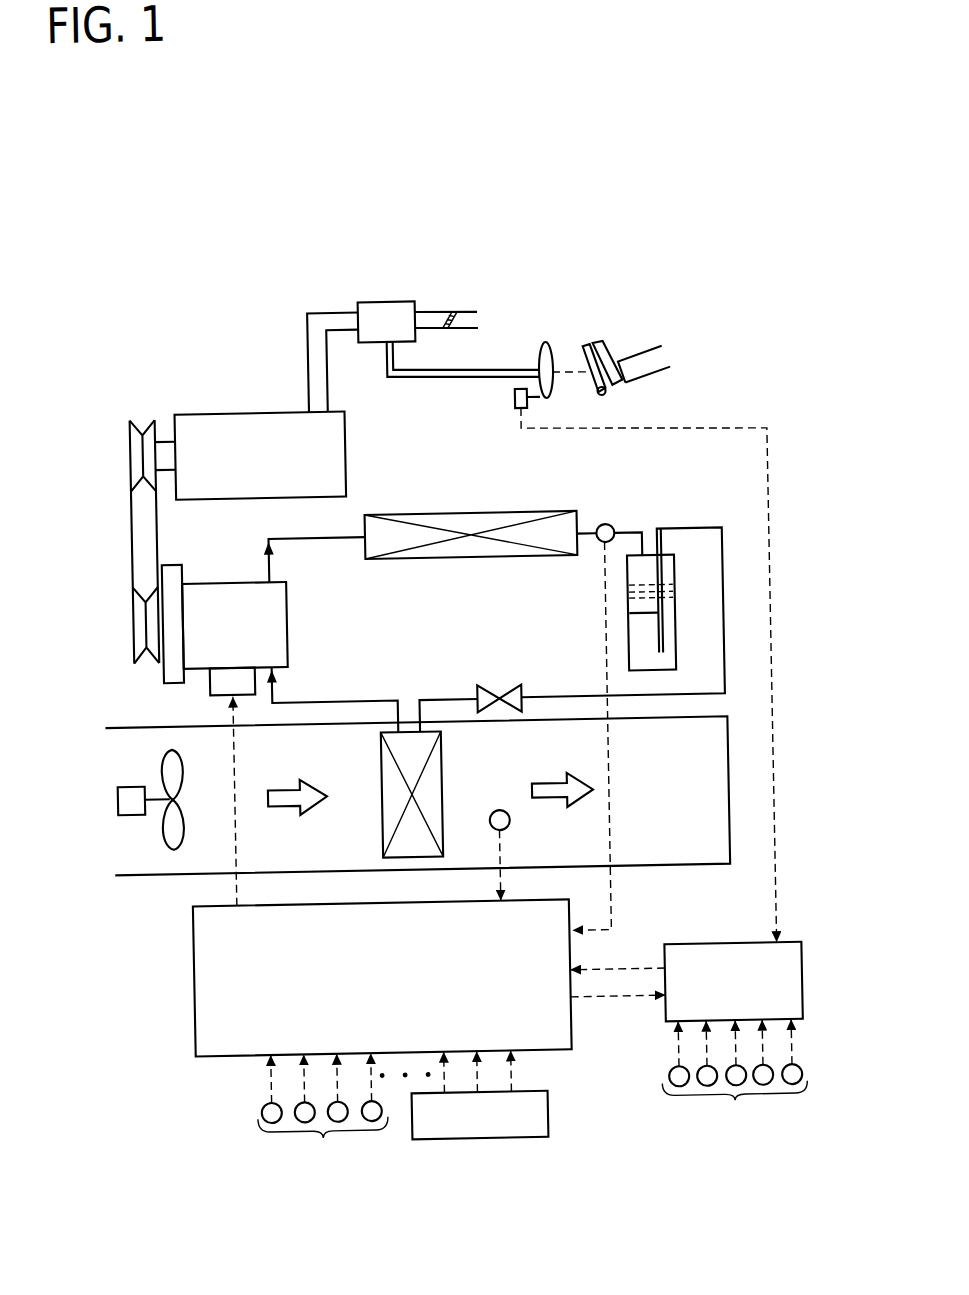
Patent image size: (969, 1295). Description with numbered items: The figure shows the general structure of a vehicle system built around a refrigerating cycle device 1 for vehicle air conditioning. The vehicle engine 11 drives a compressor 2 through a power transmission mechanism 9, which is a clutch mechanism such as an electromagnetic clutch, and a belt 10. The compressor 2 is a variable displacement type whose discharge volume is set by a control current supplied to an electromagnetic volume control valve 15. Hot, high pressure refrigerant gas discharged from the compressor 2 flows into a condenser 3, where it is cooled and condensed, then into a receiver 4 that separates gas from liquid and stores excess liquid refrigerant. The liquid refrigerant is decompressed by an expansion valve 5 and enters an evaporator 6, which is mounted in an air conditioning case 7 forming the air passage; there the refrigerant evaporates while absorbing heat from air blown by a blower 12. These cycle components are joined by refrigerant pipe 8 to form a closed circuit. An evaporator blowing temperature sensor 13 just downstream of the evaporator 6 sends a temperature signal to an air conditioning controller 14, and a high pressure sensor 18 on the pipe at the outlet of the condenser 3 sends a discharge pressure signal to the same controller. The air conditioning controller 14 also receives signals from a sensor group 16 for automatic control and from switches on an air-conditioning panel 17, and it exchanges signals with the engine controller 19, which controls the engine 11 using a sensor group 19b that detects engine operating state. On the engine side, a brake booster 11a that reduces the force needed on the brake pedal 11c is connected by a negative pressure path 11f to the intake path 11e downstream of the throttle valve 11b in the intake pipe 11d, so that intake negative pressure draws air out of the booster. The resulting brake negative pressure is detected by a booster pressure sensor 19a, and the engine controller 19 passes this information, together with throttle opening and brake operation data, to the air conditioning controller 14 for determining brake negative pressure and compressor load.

The refrigerating cycle device 1 is at (663, 522).
The compressor 2 is at (272, 606).
The condenser 3 is at (471, 520).
The receiver 4 is at (667, 631).
The expansion valve 5 is at (520, 691).
The evaporator 6 is at (384, 765).
The air conditioning case 7 is at (147, 871).
The refrigerant pipe 8 is at (303, 535).
The power transmission mechanism 9 is at (170, 669).
The belt 10 is at (153, 534).
The engine 11 is at (344, 430).
The brake booster 11a is at (554, 341).
The throttle valve 11b is at (464, 318).
The brake pedal 11c is at (587, 345).
The intake pipe 11d is at (405, 300).
The intake path 11e is at (387, 318).
The negative pressure path 11f is at (509, 370).
The blower 12 is at (169, 759).
The evaporator blowing temperature sensor 13 is at (498, 810).
The air conditioning controller 14 is at (189, 1025).
The electromagnetic volume control valve 15 is at (215, 695).
The sensor group 16 is at (323, 1116).
The air-conditioning panel 17 is at (540, 1113).
The high pressure sensor 18 is at (611, 524).
The engine controller 19 is at (798, 981).
The booster pressure sensor 19a is at (521, 398).
The sensor group 19b is at (734, 1082).